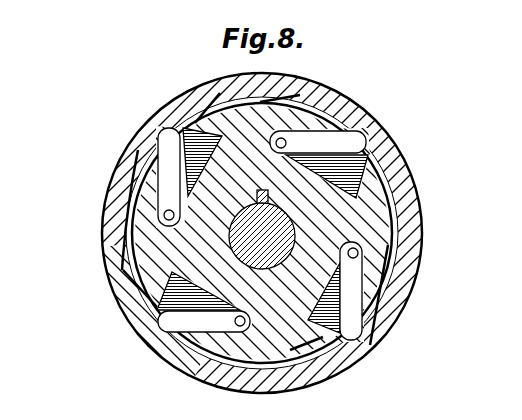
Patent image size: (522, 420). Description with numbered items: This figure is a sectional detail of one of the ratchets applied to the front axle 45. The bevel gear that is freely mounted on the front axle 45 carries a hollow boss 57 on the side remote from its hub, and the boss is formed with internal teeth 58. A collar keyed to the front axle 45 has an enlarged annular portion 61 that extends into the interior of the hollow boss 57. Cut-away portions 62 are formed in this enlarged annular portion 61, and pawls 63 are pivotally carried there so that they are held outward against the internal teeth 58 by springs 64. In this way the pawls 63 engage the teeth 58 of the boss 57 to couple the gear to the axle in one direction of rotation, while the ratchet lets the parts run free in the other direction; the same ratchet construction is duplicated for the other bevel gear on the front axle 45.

The front axle 45 is at (258, 236).
The hollow boss 57 is at (320, 96).
The internal teeth 58 is at (392, 220).
The enlarged annular portion 61 is at (382, 240).
The cut-away portions 62 is at (376, 168).
The pawls 63 is at (167, 133).
The springs 64 is at (180, 165).